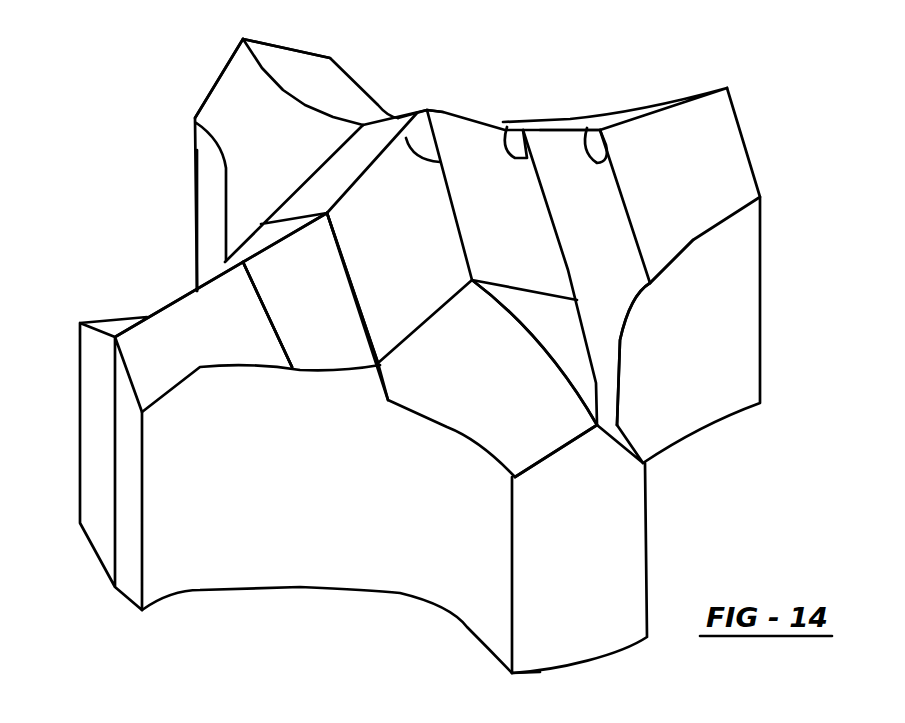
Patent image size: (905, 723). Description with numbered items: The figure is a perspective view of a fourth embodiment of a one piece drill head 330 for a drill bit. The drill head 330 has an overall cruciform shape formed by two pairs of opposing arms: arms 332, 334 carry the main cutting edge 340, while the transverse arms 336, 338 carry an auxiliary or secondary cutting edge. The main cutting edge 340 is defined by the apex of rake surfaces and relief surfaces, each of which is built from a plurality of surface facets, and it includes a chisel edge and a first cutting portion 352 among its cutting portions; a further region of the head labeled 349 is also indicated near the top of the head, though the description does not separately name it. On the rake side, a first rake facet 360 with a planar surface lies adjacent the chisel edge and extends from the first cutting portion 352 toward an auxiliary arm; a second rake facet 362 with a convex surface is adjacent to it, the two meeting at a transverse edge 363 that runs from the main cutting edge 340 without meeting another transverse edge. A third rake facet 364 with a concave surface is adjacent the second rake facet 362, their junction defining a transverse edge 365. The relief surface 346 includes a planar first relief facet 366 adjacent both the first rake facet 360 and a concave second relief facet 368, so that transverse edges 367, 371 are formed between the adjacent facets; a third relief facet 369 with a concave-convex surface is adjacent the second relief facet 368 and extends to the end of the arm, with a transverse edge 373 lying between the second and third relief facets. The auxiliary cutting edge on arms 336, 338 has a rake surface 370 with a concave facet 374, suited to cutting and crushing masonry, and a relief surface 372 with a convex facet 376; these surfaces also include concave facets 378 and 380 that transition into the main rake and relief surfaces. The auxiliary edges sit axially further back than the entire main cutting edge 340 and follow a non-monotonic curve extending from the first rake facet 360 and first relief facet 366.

The drill head 330 is at (112, 125).
The opposing arm 332 is at (740, 310).
The opposing arm 334 is at (165, 490).
The opposing arm 336 is at (620, 527).
The opposing arm 338 is at (212, 193).
The main cutting edge 340 is at (446, 100).
The relief surface 346 is at (222, 252).
The top surface 349 is at (568, 100).
The first cutting portion 352 is at (505, 697).
The first rake facet 360 is at (421, 268).
The second rake facet 362 is at (320, 313).
The transverse edge 363 is at (378, 332).
The third rake facet 364 is at (212, 340).
The transverse edge 365 is at (282, 343).
The first relief facet 366 is at (502, 220).
The transverse edge 367 is at (406, 138).
The second relief facet 368 is at (606, 236).
The third relief facet 369 is at (694, 184).
The rake surface 370 is at (551, 325).
The transverse edge 371 is at (507, 127).
The relief surface 372 is at (232, 93).
The transverse edge 373 is at (587, 128).
The concave facet 374 is at (602, 338).
The convex facet 376 is at (530, 435).
The concave facet 378 is at (390, 400).
The concave facet 380 is at (567, 347).